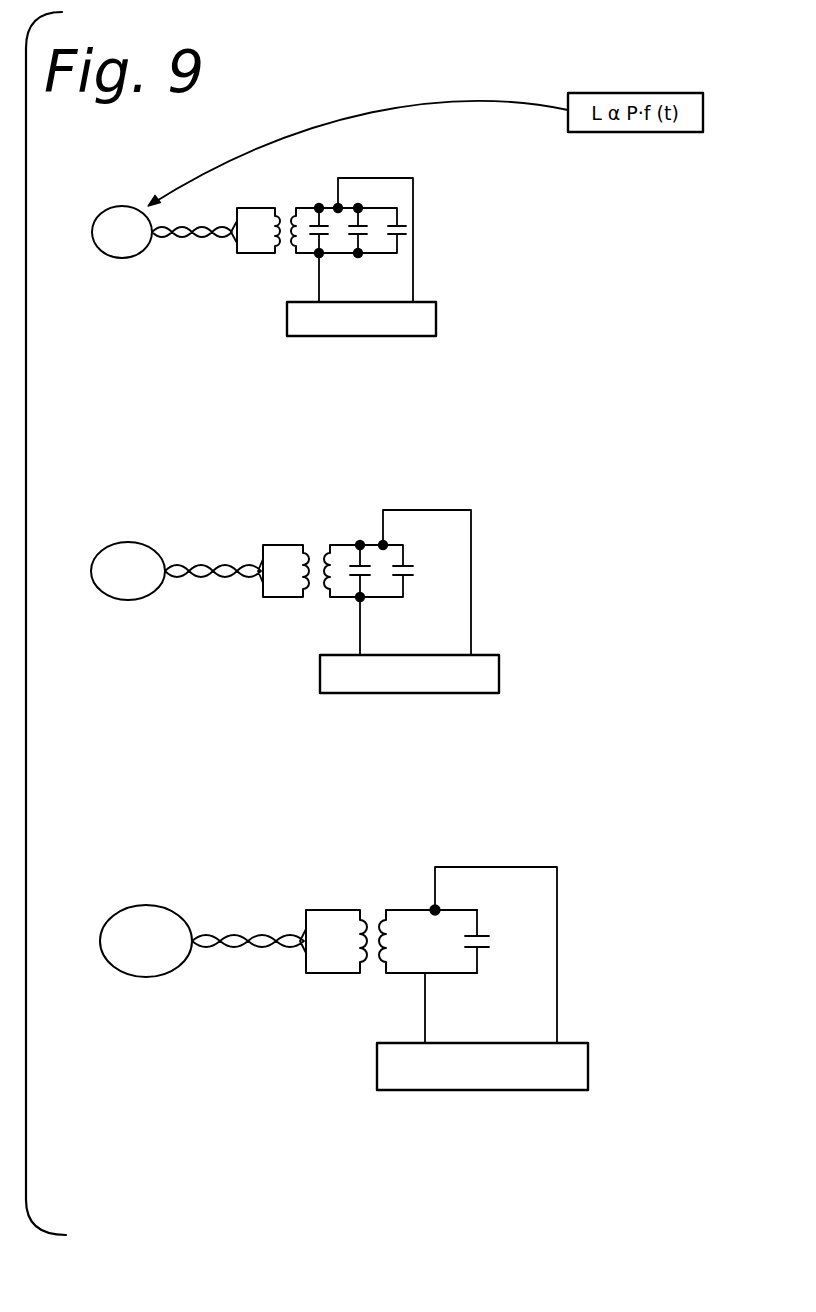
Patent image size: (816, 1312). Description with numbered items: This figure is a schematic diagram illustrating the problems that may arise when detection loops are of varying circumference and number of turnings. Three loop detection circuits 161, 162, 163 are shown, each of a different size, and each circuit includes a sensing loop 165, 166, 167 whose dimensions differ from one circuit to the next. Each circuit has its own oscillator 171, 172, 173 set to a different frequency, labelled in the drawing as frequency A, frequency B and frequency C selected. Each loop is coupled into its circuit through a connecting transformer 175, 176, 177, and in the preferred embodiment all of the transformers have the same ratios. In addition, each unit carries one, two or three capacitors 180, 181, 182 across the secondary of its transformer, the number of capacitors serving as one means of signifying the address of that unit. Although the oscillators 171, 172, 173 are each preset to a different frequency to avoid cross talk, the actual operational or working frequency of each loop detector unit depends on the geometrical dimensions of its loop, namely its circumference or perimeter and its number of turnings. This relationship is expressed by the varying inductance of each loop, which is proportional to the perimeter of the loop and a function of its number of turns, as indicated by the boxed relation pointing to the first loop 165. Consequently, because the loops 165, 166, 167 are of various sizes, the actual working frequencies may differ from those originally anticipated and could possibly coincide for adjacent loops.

The loop detection circuit 161 is at (88, 115).
The loop detection circuit 162 is at (88, 437).
The loop detection circuit 163 is at (88, 810).
The first sensing loop L1 165 is at (108, 207).
The second sensing loop L2 166 is at (108, 543).
The third sensing loop L3 167 is at (110, 913).
The oscillator 171 is at (437, 302).
The oscillator 172 is at (498, 655).
The oscillator 173 is at (588, 1043).
The connecting transformer 175 is at (318, 200).
The connecting transformer 176 is at (360, 537).
The connecting transformer 177 is at (422, 897).
The capacitors 180 is at (413, 173).
The capacitors 181 is at (471, 504).
The capacitor 182 is at (480, 935).